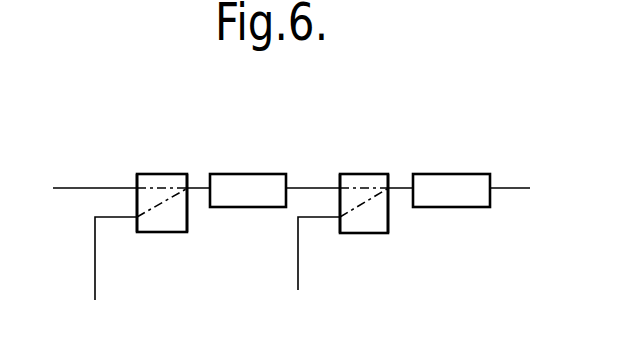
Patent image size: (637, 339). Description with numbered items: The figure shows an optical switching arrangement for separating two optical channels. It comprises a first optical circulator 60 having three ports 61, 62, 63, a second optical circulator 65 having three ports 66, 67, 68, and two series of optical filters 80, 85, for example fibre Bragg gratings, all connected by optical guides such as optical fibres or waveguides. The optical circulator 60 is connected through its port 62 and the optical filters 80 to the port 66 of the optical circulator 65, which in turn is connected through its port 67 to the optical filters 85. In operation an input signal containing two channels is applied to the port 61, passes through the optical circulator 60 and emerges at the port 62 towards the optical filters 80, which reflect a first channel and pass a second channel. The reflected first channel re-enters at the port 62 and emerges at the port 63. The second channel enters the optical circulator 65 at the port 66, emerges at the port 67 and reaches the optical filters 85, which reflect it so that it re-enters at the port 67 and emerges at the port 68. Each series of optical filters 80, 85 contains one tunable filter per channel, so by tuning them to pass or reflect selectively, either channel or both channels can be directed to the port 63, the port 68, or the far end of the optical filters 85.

The optical circulator 60 is at (160, 222).
The port 61 is at (137, 188).
The port 62 is at (187, 188).
The port 63 is at (137, 217).
The optical filters 80 is at (230, 182).
The optical circulator 65 is at (365, 222).
The port 66 is at (340, 188).
The port 67 is at (388, 188).
The port 68 is at (340, 217).
The optical filters 85 is at (450, 185).